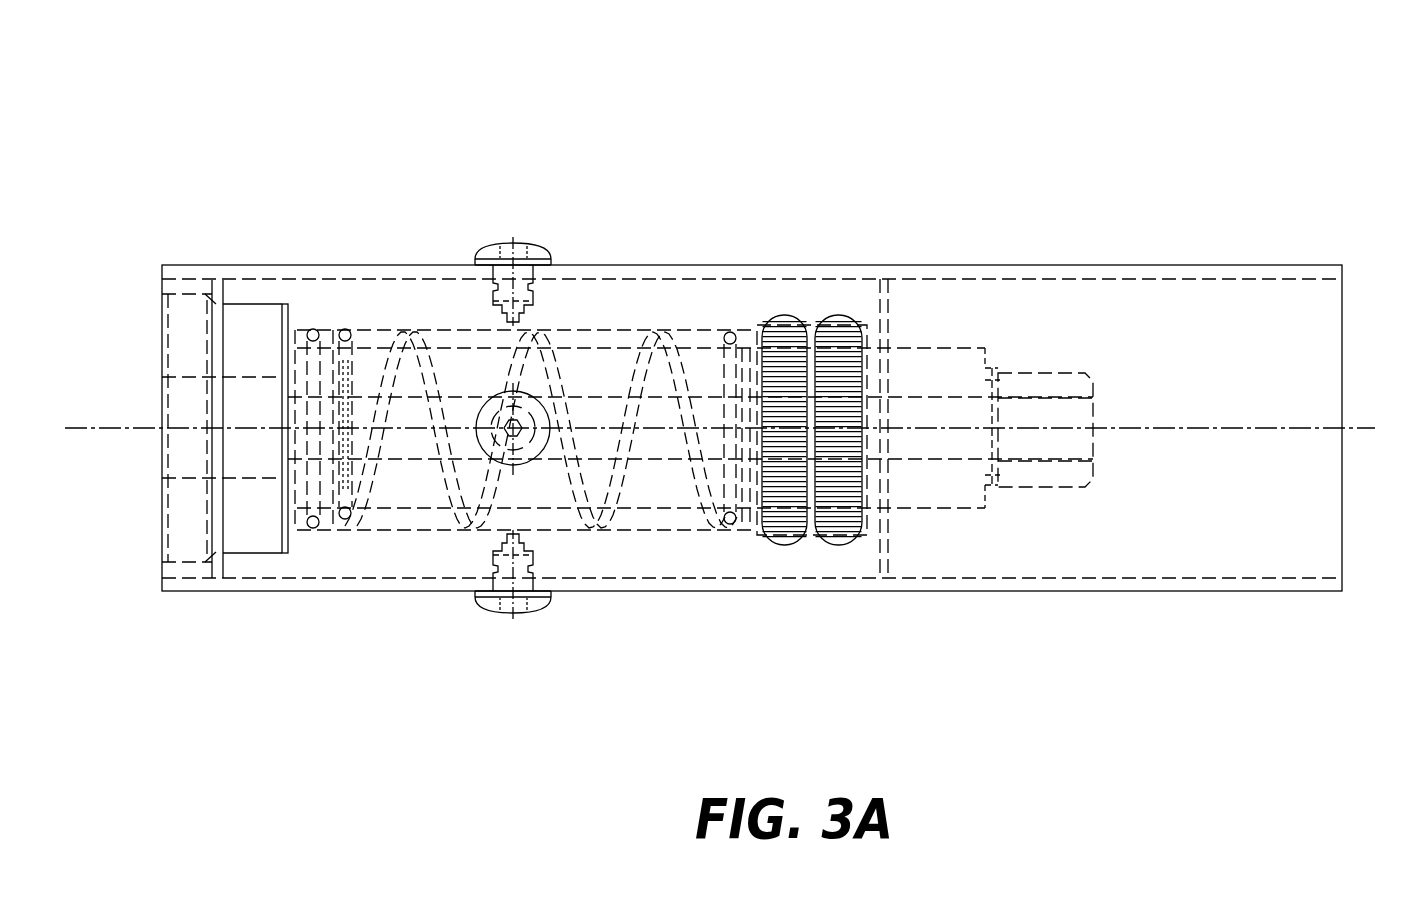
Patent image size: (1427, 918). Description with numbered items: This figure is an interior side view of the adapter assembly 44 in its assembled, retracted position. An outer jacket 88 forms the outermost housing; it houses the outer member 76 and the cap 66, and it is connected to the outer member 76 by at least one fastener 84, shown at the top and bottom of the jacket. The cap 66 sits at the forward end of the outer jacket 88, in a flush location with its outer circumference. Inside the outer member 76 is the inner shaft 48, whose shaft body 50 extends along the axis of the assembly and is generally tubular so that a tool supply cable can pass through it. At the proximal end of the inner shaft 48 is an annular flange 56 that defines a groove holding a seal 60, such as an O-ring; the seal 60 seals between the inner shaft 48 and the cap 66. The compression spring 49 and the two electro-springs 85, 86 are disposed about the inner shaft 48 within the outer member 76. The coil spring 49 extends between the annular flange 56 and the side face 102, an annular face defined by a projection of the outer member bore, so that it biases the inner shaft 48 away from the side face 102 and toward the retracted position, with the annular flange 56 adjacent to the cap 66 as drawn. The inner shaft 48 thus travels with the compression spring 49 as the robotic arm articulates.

The adapter assembly 44 is at (1350, 84).
The inner shaft 48 is at (1097, 405).
The compression spring 49 is at (414, 332).
The shaft body 50 is at (466, 348).
The annular flange 56 is at (307, 533).
The seal 60 is at (314, 329).
The cap 66 is at (158, 428).
The outer member 76 is at (693, 278).
The fastener 84 is at (543, 245).
The electro-spring 85 is at (785, 315).
The electro-spring 86 is at (840, 315).
The outer jacket 88 is at (1248, 263).
The side face 102 is at (727, 338).